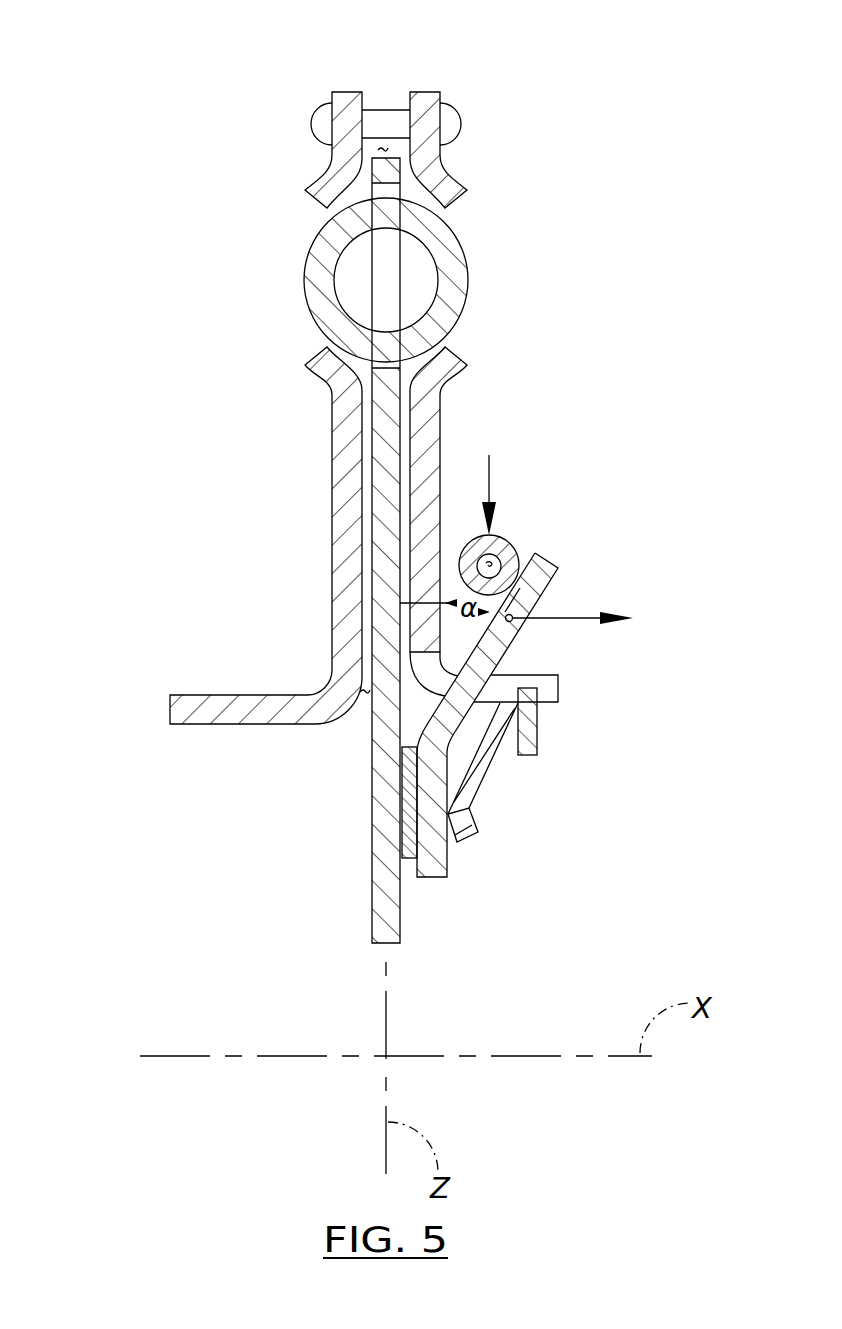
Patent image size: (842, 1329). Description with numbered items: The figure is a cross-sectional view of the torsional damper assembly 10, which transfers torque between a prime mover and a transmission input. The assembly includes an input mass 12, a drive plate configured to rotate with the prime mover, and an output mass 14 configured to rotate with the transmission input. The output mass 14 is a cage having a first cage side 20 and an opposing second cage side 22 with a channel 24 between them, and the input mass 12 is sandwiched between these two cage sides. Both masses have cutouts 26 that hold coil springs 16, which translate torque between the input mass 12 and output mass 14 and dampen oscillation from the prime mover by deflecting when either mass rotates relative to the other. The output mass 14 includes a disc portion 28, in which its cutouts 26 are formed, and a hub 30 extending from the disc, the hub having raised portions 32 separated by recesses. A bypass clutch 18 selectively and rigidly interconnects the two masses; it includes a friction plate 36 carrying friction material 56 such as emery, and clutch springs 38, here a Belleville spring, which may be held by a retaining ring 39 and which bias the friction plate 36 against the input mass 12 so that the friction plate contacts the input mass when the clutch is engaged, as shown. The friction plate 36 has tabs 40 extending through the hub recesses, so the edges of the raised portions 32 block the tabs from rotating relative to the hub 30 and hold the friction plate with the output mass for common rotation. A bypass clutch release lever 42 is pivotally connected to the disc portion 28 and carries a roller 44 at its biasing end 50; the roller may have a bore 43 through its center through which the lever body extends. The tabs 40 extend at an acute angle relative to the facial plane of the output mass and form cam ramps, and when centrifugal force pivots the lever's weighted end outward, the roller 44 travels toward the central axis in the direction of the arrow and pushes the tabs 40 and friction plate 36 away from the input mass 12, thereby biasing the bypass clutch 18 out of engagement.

The torsional damper assembly 10 is at (148, 63).
The input mass 12 is at (382, 908).
The output mass 14 is at (546, 611).
The coil springs 16 is at (447, 242).
The bypass clutch 18 is at (515, 791).
The first cage side 20 is at (442, 418).
The second cage side 22 is at (320, 526).
The channel 24 is at (380, 150).
The cutouts 26 is at (276, 255).
The disc portion 28 is at (423, 460).
The hub 30 is at (553, 721).
The raised portions 32 is at (505, 683).
The friction plate 36 is at (432, 855).
The clutch springs 38 is at (470, 820).
The retaining ring 39 is at (528, 756).
The tabs 40 is at (560, 568).
The bypass clutch release lever 42 is at (444, 589).
The bore 43 is at (510, 588).
The roller 44 is at (539, 549).
The biasing end 50 is at (500, 552).
The friction material 56 is at (408, 862).